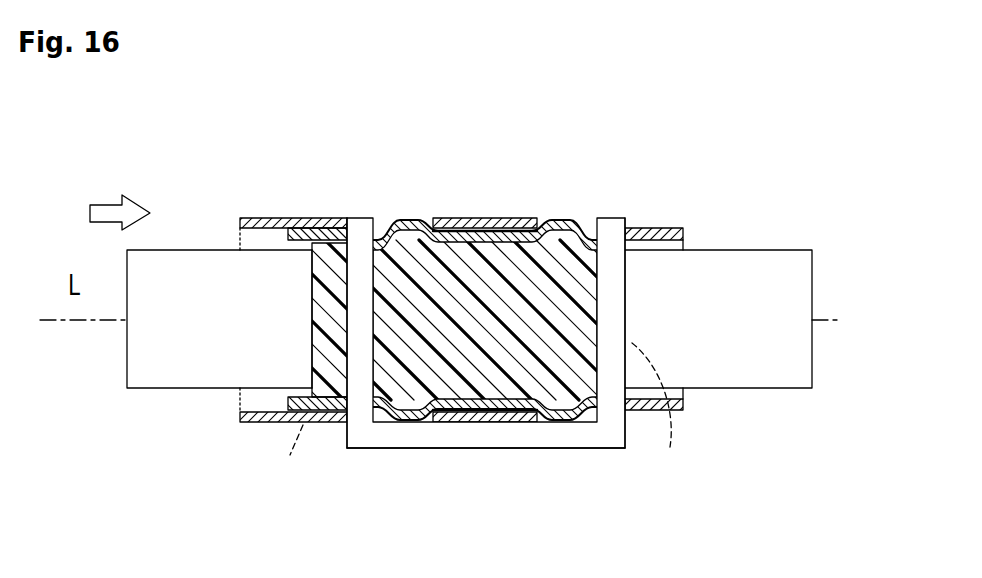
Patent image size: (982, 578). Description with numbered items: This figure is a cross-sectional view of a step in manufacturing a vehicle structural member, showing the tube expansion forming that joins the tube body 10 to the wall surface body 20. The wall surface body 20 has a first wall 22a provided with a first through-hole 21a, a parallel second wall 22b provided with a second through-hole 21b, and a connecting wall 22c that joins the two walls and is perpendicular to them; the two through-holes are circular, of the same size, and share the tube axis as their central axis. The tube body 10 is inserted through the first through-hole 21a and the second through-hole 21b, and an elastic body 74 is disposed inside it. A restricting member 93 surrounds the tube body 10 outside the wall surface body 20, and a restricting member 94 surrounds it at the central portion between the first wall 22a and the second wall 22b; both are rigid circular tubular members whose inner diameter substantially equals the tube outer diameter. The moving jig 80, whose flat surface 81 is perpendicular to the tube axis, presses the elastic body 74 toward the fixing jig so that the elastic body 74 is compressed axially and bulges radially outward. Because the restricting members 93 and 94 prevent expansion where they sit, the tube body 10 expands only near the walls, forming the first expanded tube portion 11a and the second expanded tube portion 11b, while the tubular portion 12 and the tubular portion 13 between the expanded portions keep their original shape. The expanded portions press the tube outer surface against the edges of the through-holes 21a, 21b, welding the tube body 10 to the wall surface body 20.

The tube body 10 is at (683, 238).
The first expanded tube portion 11a is at (452, 371).
The second expanded tube portion 11b is at (549, 378).
The tubular portion 12 is at (288, 218).
The tubular portion 13 is at (490, 218).
The wall surface body 20 is at (357, 218).
The first through-hole 21a is at (280, 459).
The second through-hole 21b is at (671, 419).
The first wall 22a is at (347, 433).
The second wall 22b is at (625, 433).
The connecting wall 22c is at (487, 440).
The elastic body 74 is at (411, 236).
The moving jig 80 is at (195, 388).
The flat surface 81 is at (289, 232).
The restricting member 93 is at (238, 220).
The restricting member 94 is at (527, 222).